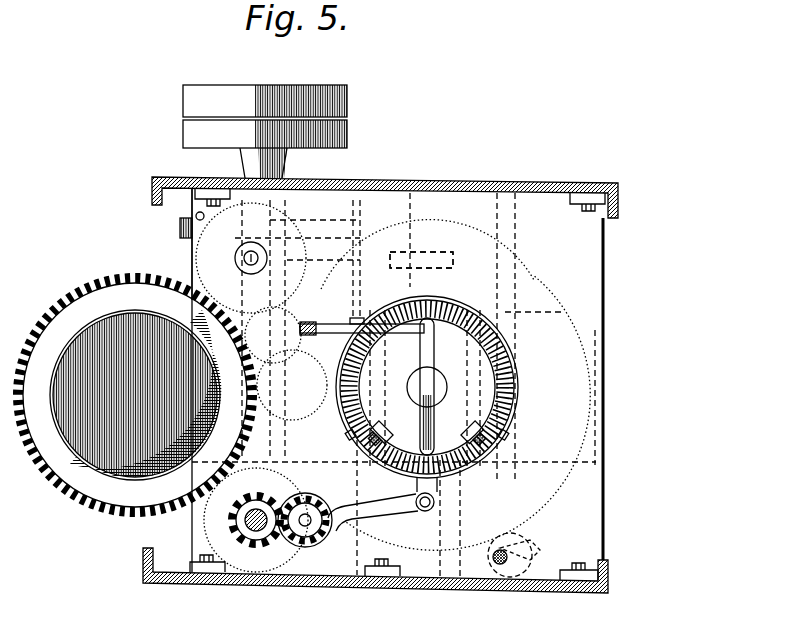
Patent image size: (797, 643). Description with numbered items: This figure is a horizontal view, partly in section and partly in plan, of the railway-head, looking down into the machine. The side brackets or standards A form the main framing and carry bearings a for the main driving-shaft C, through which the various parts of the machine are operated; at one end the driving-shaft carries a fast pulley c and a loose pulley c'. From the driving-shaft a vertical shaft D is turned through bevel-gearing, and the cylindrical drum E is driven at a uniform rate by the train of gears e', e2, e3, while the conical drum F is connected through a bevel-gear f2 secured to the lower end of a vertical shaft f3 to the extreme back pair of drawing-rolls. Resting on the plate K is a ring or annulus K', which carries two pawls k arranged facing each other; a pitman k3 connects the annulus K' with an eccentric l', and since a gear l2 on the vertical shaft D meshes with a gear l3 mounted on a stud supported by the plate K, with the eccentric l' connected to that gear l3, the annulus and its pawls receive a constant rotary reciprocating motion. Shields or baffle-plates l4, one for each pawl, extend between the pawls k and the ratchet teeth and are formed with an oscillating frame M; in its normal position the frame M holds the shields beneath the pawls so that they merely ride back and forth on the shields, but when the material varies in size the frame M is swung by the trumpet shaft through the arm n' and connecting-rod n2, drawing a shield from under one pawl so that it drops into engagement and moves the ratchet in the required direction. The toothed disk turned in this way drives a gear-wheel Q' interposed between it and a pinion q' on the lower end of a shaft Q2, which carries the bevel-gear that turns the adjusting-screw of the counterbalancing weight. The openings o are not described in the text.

The side brackets or standards A is at (419, 184).
The fast pulley c is at (247, 101).
The loose pulley c' is at (246, 148).
The vertical shaft D is at (244, 520).
The shaft Q2 is at (206, 218).
The pinion q' is at (178, 217).
The gear of train e' is at (161, 239).
The gear-wheel Q' is at (245, 335).
The bearings a is at (286, 201).
The plate K is at (468, 401).
The gear of train e2 is at (410, 232).
The gear of train e3 is at (453, 260).
The openings o is at (404, 280).
The ring or annulus K' is at (441, 387).
The frame M is at (436, 362).
The arm n' is at (362, 315).
The connecting-rod n2 is at (390, 351).
The shields or baffle-plates l4 is at (427, 424).
The pawls k is at (385, 466).
The pitman k3 is at (386, 511).
The eccentric l' is at (308, 530).
The gear l3 is at (298, 509).
The gear l2 is at (256, 520).
The bevel-gear f2 is at (547, 547).
The vertical shaft f3 is at (493, 558).
The main driving-shaft C is at (270, 440).
The cylindrical drum E is at (324, 440).
The conical drum F is at (531, 445).